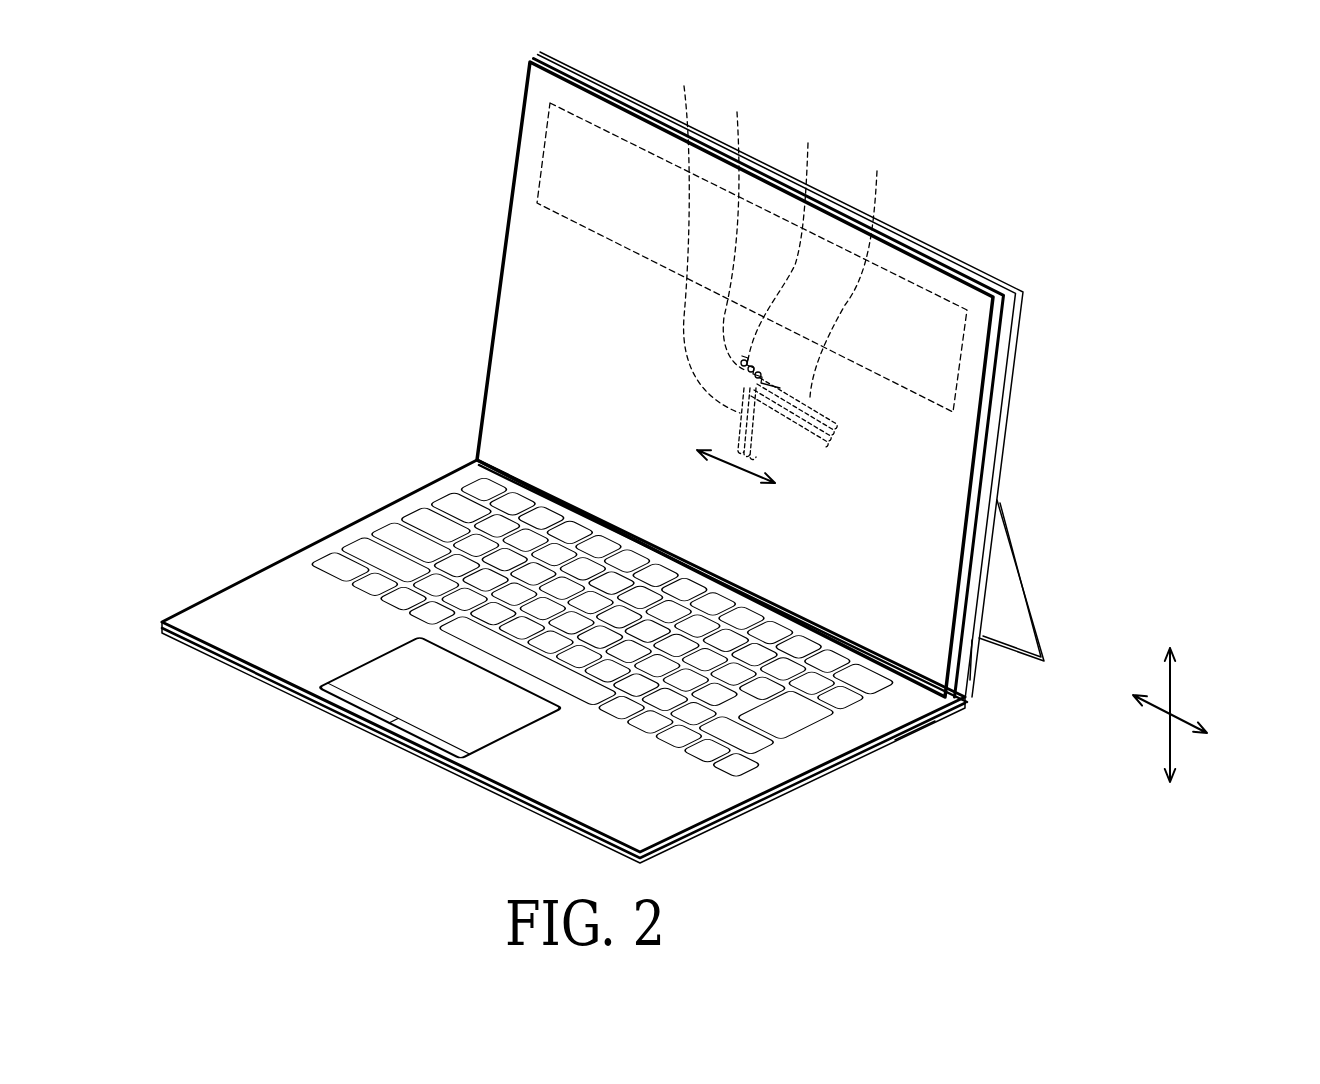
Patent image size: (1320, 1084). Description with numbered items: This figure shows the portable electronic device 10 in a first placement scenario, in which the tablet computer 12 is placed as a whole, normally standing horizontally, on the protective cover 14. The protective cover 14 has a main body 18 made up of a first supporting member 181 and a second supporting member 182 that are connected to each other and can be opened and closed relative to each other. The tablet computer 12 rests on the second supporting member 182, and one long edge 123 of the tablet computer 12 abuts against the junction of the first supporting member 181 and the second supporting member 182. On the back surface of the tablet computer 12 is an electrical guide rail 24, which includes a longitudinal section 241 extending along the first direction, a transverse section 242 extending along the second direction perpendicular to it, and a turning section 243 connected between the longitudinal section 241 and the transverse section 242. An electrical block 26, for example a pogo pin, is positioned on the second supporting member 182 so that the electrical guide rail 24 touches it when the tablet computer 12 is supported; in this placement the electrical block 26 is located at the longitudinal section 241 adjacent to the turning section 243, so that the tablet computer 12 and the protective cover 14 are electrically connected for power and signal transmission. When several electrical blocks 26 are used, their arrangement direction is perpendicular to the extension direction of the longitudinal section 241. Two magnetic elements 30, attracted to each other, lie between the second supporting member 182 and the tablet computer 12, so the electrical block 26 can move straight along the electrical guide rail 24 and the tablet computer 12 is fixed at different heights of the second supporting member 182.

The portable electronic device 10 is at (272, 101).
The tablet computer 12 is at (950, 292).
The protective cover 14 is at (336, 521).
The long edge 123 is at (500, 487).
The main body 18 is at (1056, 702).
The first supporting member 181 is at (913, 733).
The second supporting member 182 is at (977, 657).
The electrical guide rail 24 is at (846, 417).
The longitudinal section 241 is at (697, 233).
The transverse section 242 is at (853, 268).
The turning section 243 is at (791, 235).
The electrical block 26 is at (731, 225).
The magnetic element 30 is at (567, 160).